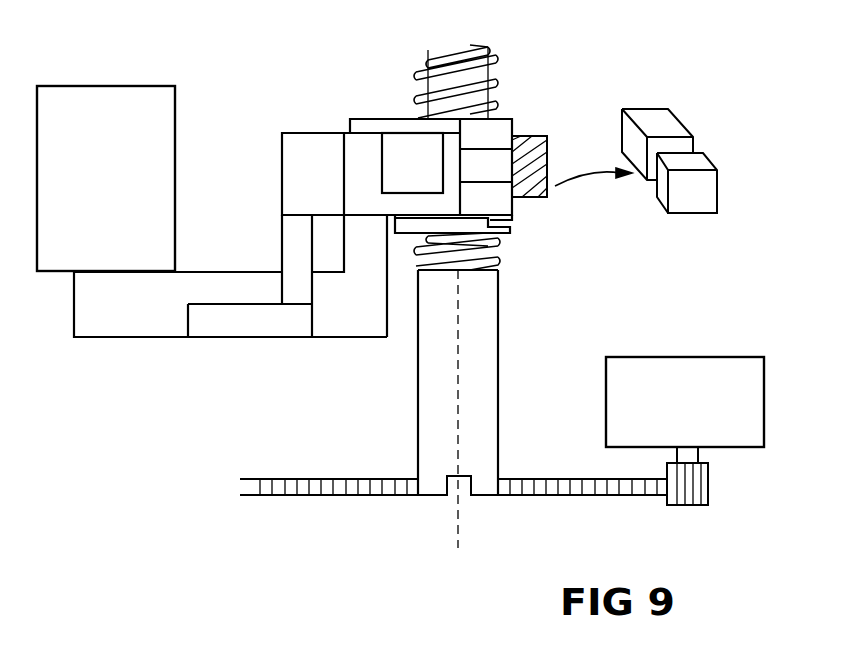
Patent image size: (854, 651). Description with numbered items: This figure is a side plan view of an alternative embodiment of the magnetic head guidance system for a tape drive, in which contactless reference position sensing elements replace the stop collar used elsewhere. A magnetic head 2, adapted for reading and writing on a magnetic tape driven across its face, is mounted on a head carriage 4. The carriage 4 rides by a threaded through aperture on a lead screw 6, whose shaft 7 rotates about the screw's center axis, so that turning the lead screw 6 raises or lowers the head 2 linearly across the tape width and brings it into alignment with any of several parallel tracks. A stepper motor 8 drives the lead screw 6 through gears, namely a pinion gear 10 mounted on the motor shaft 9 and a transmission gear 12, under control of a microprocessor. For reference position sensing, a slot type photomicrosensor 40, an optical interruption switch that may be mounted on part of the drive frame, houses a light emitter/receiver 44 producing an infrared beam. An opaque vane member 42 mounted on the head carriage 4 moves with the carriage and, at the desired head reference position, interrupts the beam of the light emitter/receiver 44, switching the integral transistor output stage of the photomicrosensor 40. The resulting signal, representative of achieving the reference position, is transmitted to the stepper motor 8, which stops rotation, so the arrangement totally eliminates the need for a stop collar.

The magnetic head 2 is at (110, 86).
The head carriage 4 is at (510, 119).
The lead screw 6 is at (492, 65).
The shaft 7 is at (498, 394).
The stepper motor 8 is at (662, 357).
The motor shaft 9 is at (699, 453).
The pinion gear 10 is at (709, 483).
The transmission gear 12 is at (578, 494).
The slot type photomicrosensor 40 is at (680, 120).
The opaque vane member 42 is at (547, 133).
The light emitter/receiver 44 is at (680, 148).